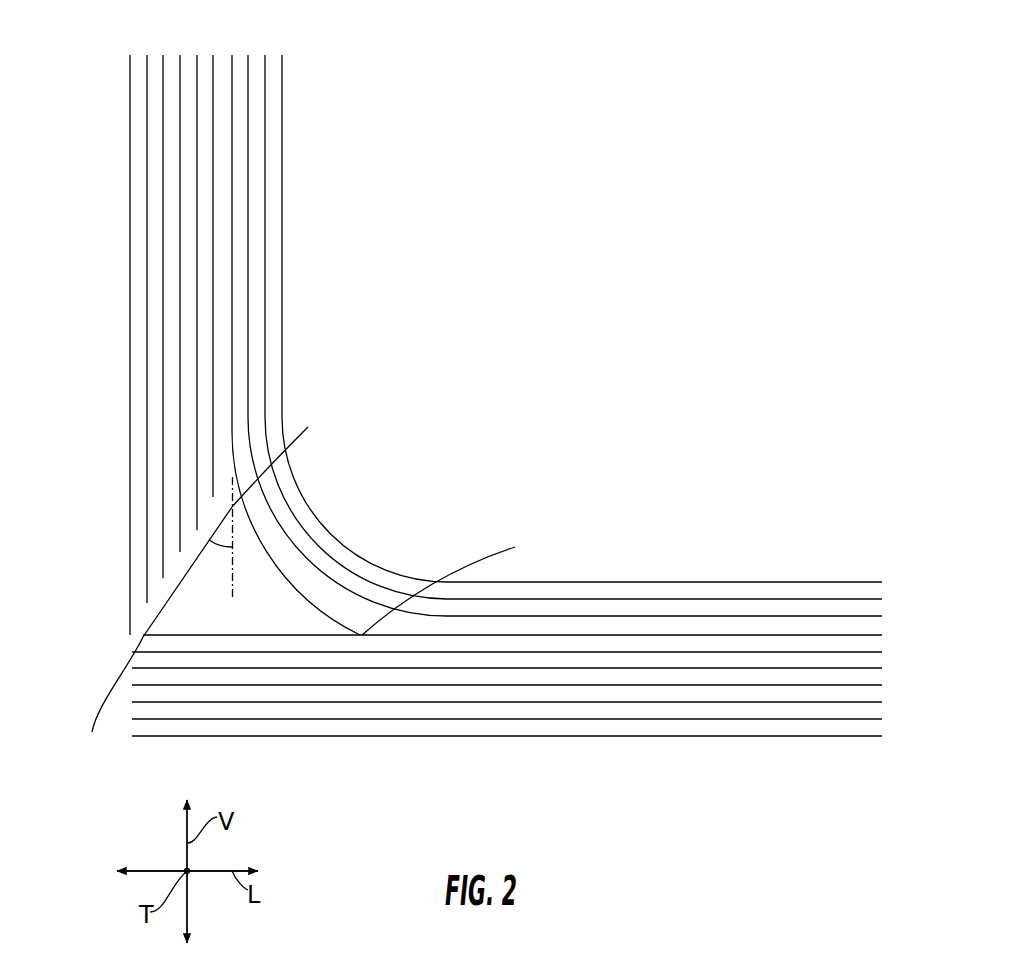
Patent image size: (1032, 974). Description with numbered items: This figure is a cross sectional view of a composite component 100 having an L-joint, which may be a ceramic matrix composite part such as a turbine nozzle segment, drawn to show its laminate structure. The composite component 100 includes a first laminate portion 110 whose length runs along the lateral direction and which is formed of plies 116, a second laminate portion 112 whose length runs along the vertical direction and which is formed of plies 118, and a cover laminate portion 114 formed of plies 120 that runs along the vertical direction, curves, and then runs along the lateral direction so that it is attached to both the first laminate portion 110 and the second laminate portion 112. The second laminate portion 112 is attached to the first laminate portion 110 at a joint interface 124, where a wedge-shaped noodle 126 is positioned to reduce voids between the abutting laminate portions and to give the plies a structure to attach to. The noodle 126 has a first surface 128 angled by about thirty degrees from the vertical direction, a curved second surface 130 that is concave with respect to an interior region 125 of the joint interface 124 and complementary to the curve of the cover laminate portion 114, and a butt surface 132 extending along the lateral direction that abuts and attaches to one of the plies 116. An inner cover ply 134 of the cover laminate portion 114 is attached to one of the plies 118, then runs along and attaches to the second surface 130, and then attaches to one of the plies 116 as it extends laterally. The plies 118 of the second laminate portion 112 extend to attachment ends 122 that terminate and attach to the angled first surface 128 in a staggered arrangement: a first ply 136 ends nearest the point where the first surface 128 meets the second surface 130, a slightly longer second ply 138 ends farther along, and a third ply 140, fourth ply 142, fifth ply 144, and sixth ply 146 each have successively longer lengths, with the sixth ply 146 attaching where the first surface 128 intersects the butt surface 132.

The composite component 100 is at (645, 157).
The first laminate portion 110 is at (885, 645).
The second laminate portion 112 is at (217, 50).
The cover laminate portion 114 is at (283, 50).
The plies 116 is at (715, 740).
The plies 118 is at (117, 167).
The plies 120 is at (730, 578).
The attachment ends 122 is at (195, 532).
The joint interface 124 is at (118, 642).
The interior region 125 is at (343, 457).
The noodle 126 is at (253, 572).
The first surface 128 is at (217, 517).
The second surface 130 is at (323, 612).
The butt surface 132 is at (290, 640).
The inner cover ply 134 is at (232, 243).
The first ply 136 is at (213, 280).
The second ply 138 is at (197, 308).
The third ply 140 is at (180, 347).
The fourth ply 142 is at (163, 378).
The fifth ply 144 is at (147, 410).
The sixth ply 146 is at (130, 433).